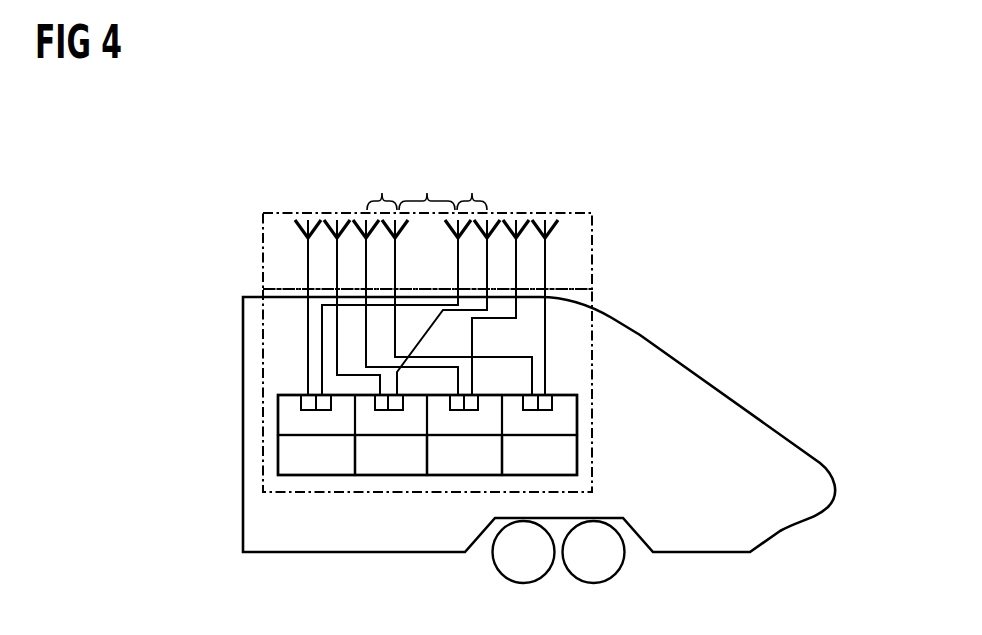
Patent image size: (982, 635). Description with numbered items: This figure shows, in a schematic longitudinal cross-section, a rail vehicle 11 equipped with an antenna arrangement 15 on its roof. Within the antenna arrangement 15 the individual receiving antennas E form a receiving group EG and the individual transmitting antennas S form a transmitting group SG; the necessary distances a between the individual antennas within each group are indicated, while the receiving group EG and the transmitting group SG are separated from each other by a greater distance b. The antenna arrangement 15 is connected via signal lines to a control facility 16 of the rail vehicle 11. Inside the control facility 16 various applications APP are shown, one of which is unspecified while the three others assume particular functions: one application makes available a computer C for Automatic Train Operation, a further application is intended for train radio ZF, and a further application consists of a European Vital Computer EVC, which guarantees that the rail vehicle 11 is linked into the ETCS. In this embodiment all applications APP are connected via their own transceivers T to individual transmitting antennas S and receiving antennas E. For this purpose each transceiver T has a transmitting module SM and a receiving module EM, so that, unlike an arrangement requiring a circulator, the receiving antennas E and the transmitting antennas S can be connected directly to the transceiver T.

The rail vehicle 11 is at (710, 392).
The antenna arrangement 15 is at (592, 258).
The control facility 16 is at (592, 450).
The receiving group EG is at (383, 273).
The transmitting group SG is at (491, 272).
The receiving antenna E is at (297, 223).
The transmitting antenna S is at (558, 232).
The distance a is at (427, 181).
The distance b is at (427, 181).
The receiving module EM is at (320, 398).
The transmitting module SM is at (278, 405).
The transceiver T is at (413, 386).
The computer C is at (313, 460).
The train radio ZF is at (396, 462).
The European Vital Computer EVC is at (460, 462).
The application APP is at (562, 465).